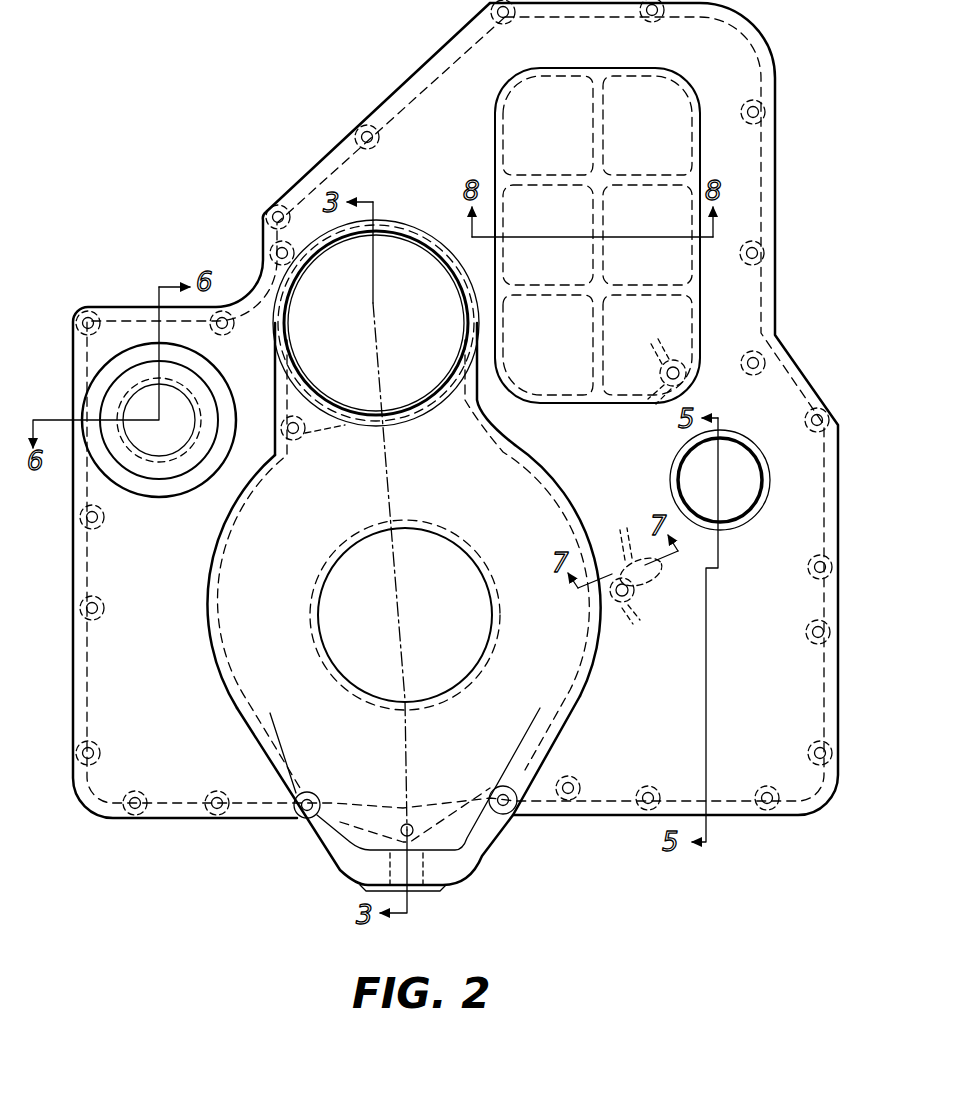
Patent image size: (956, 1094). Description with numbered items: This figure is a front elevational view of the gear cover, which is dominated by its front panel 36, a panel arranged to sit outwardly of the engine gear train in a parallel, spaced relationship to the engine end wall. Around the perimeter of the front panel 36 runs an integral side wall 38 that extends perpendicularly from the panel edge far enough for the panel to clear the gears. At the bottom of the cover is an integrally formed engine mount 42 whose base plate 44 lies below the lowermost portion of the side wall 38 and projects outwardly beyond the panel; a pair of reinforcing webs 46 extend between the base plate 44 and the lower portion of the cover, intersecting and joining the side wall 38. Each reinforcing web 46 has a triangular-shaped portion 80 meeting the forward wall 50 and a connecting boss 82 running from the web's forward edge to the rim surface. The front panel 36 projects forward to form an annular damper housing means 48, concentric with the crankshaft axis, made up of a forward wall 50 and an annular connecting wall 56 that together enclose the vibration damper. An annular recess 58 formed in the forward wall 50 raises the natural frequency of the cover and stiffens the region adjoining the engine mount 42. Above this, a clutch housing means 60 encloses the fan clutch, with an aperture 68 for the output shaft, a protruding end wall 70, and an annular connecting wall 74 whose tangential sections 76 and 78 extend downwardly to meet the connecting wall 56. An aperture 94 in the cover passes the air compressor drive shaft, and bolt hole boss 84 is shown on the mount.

The front panel 36 is at (418, 118).
The side wall 38 is at (851, 458).
The engine mount 42 is at (338, 884).
The base plate 44 is at (437, 882).
The reinforcing webs 46 is at (265, 772).
The damper housing means 48 is at (210, 552).
The forward wall 50 is at (286, 568).
The connecting wall 56 is at (545, 480).
The annular recess 58 is at (445, 648).
The clutch housing means 60 is at (405, 217).
The aperture 68 is at (315, 384).
The protruding end wall 70 is at (285, 326).
The annular connecting wall 74 is at (300, 269).
The tangential section 76 is at (278, 392).
The tangential section 78 is at (470, 412).
The triangular-shaped portion 80 is at (293, 762).
The connecting boss 82 is at (317, 797).
The bracket bolt hole 84 is at (297, 820).
The aperture 94 is at (688, 500).